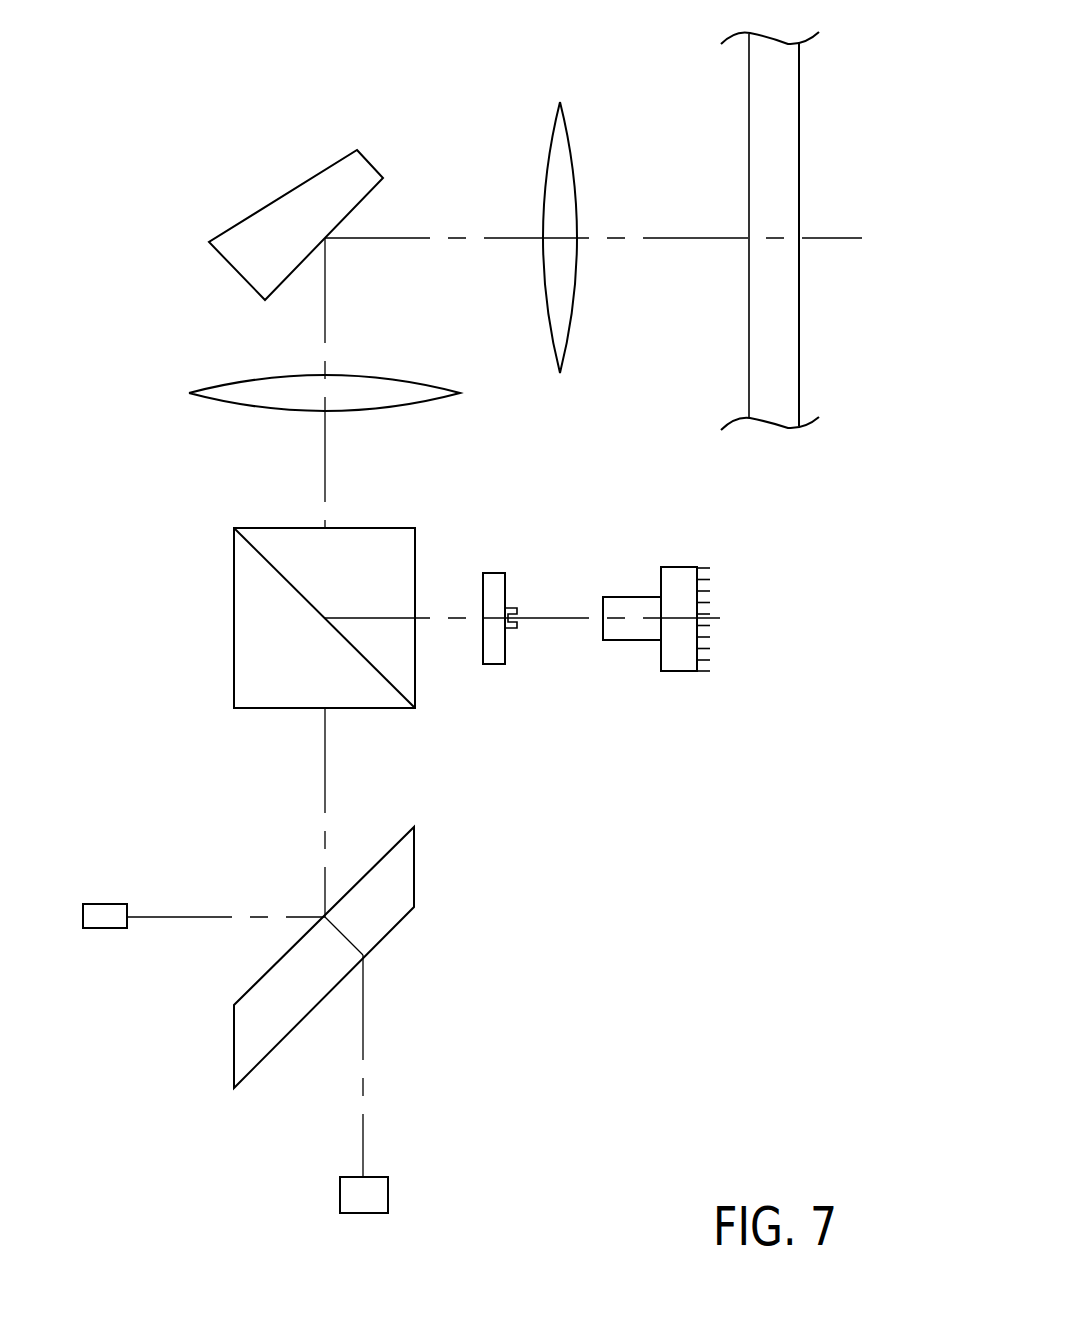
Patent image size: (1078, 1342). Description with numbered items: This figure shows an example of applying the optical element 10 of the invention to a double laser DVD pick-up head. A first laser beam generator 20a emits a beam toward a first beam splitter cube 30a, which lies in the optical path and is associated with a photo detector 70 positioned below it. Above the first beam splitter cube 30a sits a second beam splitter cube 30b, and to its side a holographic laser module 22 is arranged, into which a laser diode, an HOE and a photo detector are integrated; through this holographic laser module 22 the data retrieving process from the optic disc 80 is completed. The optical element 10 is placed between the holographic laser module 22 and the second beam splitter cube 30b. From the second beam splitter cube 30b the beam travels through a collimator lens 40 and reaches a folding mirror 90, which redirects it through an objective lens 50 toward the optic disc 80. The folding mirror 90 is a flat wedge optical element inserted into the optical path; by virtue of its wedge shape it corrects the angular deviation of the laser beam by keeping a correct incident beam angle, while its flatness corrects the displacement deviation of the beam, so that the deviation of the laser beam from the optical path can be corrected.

The optical element 10 is at (493, 657).
The first laser beam generator 20a is at (100, 913).
The holographic laser module 22 is at (685, 569).
The first beam splitter cube 30a is at (420, 874).
The second beam splitter cube 30b is at (225, 610).
The collimator lens 40 is at (245, 395).
The objective lens 50 is at (564, 128).
The photo detector 70 is at (347, 1203).
The optic disc 80 is at (790, 86).
The folding mirror 90 is at (283, 202).